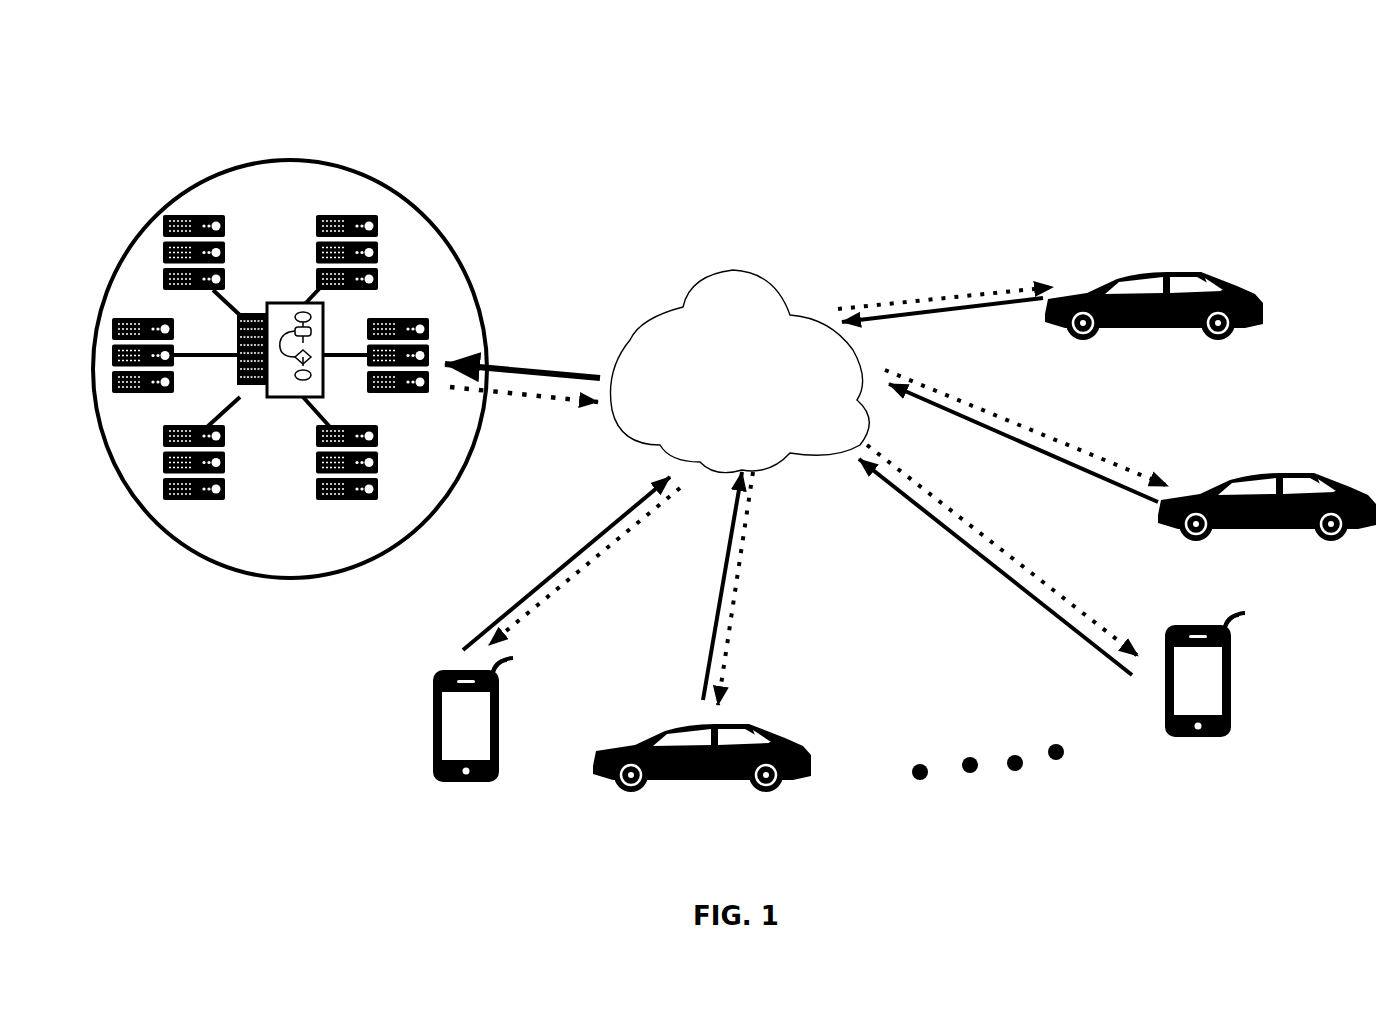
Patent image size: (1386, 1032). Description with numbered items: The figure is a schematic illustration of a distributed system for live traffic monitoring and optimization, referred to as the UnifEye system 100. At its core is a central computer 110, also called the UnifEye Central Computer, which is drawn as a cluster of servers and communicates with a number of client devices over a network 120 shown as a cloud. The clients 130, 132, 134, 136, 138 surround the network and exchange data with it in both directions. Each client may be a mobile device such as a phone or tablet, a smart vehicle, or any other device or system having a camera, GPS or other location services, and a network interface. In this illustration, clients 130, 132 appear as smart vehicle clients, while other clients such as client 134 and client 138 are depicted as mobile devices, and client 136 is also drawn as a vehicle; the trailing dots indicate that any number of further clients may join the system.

The system for live traffic monitoring and optimization 100 is at (1052, 96).
The central computer 110 is at (432, 225).
The network 120 is at (748, 283).
The client device 130 is at (1235, 283).
The client device 132 is at (1265, 477).
The client device 134 is at (1232, 677).
The client device 136 is at (783, 740).
The client device 138 is at (500, 705).